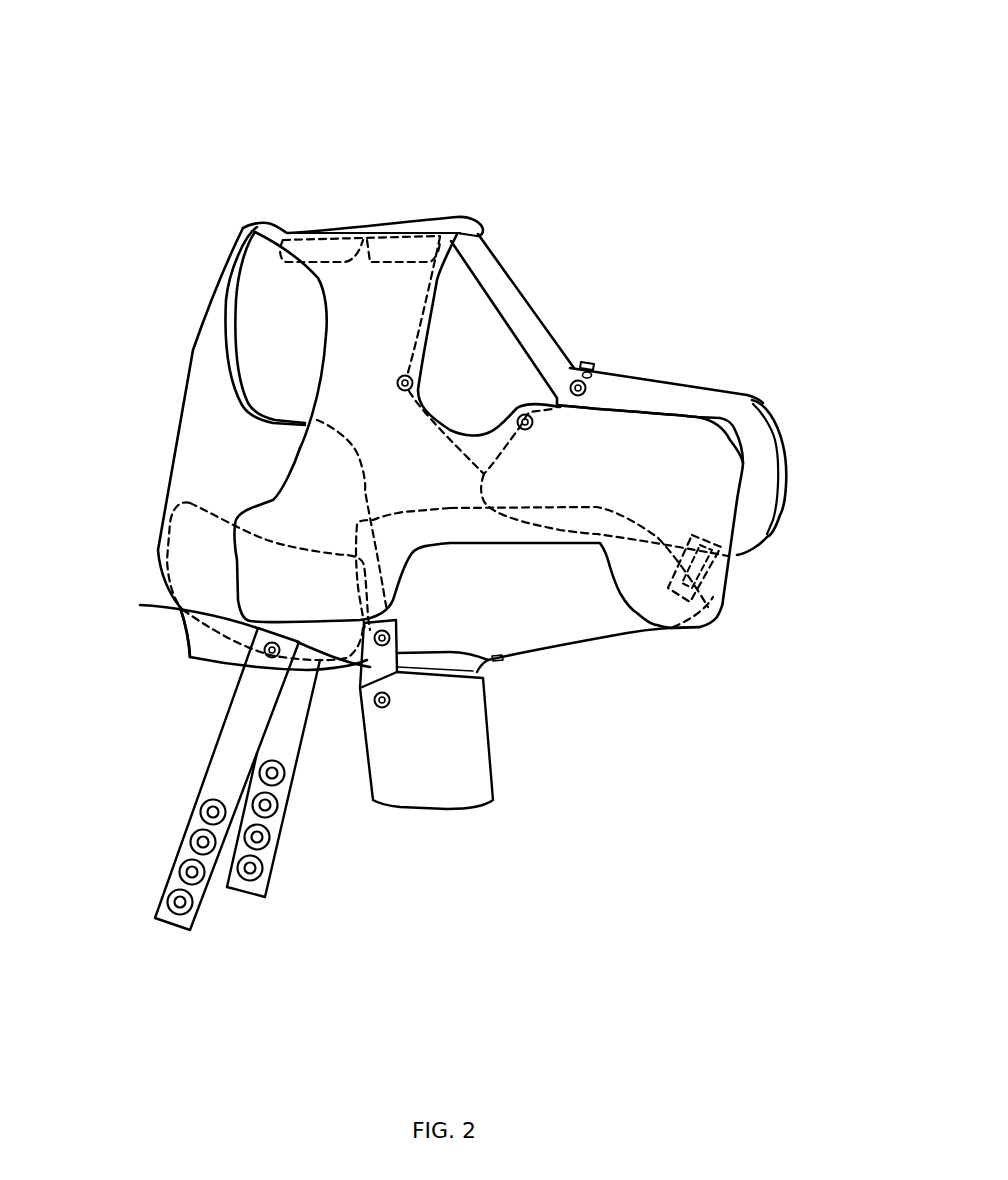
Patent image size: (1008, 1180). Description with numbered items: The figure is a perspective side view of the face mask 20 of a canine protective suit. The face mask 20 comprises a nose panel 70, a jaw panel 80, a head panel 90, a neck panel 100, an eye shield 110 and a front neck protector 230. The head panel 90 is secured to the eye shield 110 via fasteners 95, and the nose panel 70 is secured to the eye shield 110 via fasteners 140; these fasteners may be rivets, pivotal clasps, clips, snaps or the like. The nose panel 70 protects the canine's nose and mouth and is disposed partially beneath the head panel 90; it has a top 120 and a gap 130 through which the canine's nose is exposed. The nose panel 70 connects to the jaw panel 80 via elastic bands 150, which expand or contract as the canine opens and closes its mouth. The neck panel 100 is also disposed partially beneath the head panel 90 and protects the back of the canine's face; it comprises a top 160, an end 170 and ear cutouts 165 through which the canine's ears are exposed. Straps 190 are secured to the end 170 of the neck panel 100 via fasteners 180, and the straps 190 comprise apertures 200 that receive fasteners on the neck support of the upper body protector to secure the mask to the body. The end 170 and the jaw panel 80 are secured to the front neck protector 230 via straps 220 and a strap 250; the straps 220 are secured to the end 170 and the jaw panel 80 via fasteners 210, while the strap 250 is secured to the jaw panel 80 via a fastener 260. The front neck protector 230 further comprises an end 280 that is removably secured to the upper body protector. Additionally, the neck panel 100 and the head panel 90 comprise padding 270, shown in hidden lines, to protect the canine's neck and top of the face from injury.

The face mask 20 is at (308, 98).
The nose panel 70 is at (680, 400).
The jaw panel 80 is at (545, 650).
The head panel 90 is at (373, 300).
The fasteners 95 is at (396, 380).
The neck panel 100 is at (203, 427).
The eye shield 110 is at (532, 337).
The top 120 is at (607, 380).
The gap 130 is at (770, 430).
The fasteners 140 is at (593, 363).
The elastic bands 150 is at (693, 567).
The top 160 is at (215, 300).
The ear cutouts 165 is at (283, 330).
The end 170 is at (222, 652).
The fasteners 180 is at (177, 605).
The straps 190 is at (220, 775).
The apertures 200 is at (182, 902).
The fasteners 210 is at (587, 620).
The straps 220 is at (397, 673).
The front neck protector 230 is at (463, 759).
The strap 250 is at (490, 667).
The fastener 260 is at (498, 661).
The padding 270 is at (323, 250).
The end 280 is at (425, 797).